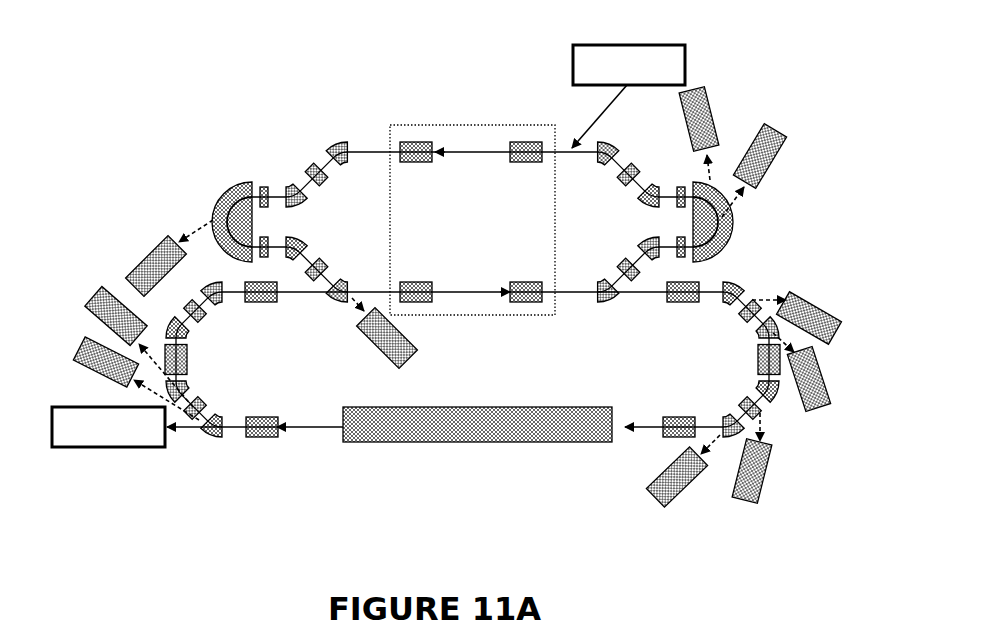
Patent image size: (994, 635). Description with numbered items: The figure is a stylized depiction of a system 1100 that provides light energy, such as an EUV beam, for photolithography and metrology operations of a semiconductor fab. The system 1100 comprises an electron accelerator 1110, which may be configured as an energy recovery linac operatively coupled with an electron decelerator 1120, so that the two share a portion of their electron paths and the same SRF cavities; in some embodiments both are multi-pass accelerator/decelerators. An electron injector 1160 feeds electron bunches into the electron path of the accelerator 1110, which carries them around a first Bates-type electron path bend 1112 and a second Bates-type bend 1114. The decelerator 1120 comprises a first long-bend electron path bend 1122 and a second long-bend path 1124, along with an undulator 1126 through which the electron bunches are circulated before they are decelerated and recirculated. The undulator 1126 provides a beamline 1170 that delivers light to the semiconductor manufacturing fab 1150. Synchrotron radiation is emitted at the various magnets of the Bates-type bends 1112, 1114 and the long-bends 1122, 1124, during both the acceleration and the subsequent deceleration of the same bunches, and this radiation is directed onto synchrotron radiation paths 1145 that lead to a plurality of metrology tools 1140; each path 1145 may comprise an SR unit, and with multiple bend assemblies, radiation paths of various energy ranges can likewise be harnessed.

The system 1100 is at (446, 276).
The electron accelerator 1110 is at (512, 107).
The first Bates-type electron path bend 1112 is at (615, 213).
The second Bates-type bend 1114 is at (299, 225).
The electron decelerator 1120 is at (524, 330).
The first long-bend electron path bend 1122 is at (706, 353).
The second long-bend path 1124 is at (212, 364).
The undulator 1126 is at (505, 445).
The metrology tools 1140 is at (90, 300).
The synchrotron radiation paths 1145 is at (760, 296).
The semiconductor manufacturing fab 1150 is at (130, 450).
The electron injector 1160 is at (686, 63).
The beamline 1170 is at (186, 431).